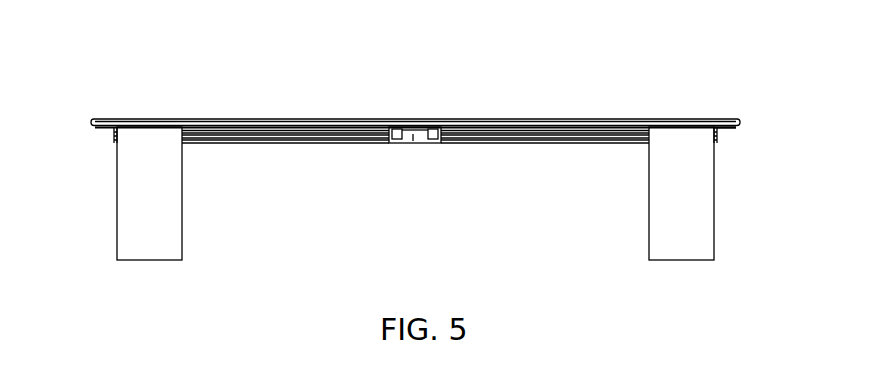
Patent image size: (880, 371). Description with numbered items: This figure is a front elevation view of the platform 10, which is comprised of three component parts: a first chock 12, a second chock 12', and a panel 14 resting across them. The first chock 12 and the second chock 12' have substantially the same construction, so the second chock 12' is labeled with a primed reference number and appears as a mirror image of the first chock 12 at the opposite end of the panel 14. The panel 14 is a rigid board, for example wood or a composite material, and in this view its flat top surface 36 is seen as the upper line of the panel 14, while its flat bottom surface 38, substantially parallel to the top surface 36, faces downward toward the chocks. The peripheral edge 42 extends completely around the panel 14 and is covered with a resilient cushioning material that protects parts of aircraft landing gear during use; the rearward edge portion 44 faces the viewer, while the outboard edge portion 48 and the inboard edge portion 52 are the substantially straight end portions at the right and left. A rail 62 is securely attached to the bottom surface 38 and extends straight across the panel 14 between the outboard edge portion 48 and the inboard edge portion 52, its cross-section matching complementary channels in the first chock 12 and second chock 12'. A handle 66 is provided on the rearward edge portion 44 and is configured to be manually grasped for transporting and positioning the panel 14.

The platform 10 is at (582, 56).
The first chock 12 is at (113, 214).
The second chock 12' is at (721, 214).
The panel 14 is at (680, 118).
The top surface 36 is at (143, 119).
The bottom surface 38 is at (558, 142).
The peripheral edge 42 is at (742, 115).
The rearward edge portion 44 is at (475, 119).
The outboard edge portion 48 is at (742, 125).
The inboard edge portion 52 is at (91, 122).
The rail 62 is at (263, 142).
The handle 66 is at (413, 136).